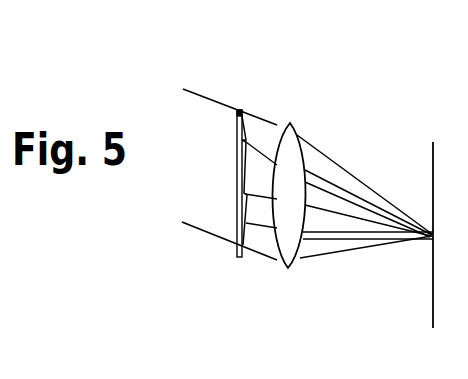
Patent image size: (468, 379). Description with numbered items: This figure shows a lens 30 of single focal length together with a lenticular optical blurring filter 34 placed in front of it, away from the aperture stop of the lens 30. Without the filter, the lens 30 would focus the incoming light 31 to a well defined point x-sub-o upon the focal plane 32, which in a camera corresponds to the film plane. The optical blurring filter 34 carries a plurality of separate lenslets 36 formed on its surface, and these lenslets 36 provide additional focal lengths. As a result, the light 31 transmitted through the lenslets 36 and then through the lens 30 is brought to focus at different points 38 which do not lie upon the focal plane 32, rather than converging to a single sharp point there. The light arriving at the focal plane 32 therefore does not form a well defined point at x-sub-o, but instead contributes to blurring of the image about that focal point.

The lens 30 is at (295, 131).
The light 31 is at (203, 92).
The focal plane 32 is at (432, 155).
The lenticular optical blurring filter 34 is at (236, 128).
The lenslets 36 is at (238, 202).
The focus point 38 is at (360, 210).